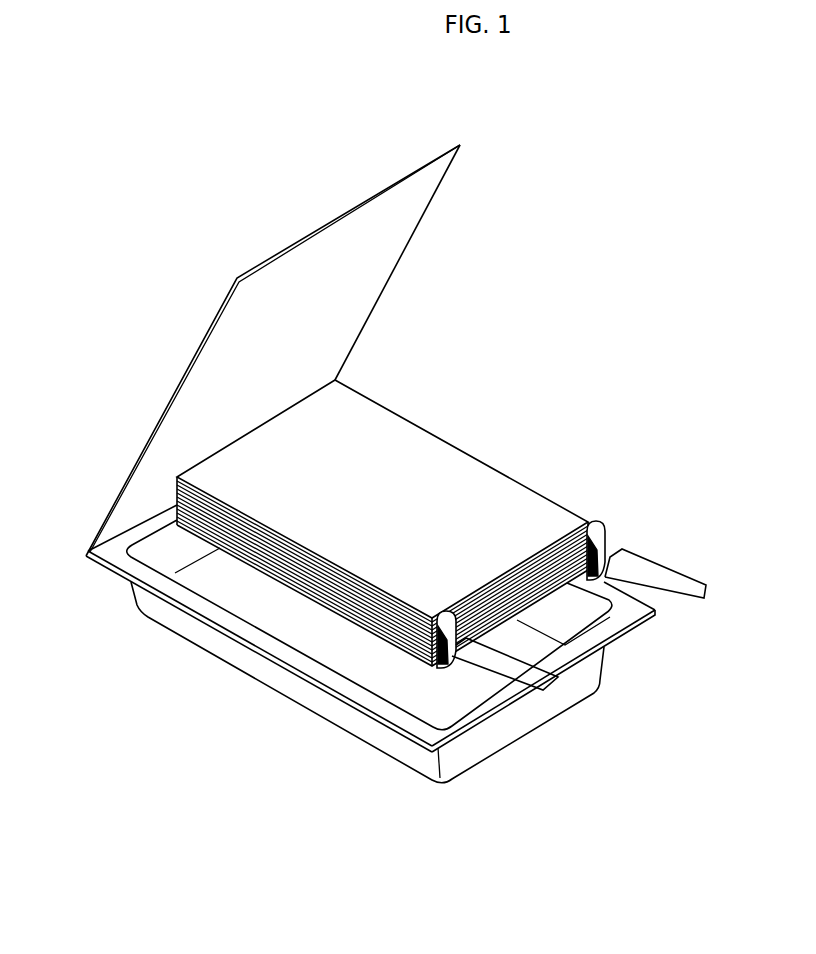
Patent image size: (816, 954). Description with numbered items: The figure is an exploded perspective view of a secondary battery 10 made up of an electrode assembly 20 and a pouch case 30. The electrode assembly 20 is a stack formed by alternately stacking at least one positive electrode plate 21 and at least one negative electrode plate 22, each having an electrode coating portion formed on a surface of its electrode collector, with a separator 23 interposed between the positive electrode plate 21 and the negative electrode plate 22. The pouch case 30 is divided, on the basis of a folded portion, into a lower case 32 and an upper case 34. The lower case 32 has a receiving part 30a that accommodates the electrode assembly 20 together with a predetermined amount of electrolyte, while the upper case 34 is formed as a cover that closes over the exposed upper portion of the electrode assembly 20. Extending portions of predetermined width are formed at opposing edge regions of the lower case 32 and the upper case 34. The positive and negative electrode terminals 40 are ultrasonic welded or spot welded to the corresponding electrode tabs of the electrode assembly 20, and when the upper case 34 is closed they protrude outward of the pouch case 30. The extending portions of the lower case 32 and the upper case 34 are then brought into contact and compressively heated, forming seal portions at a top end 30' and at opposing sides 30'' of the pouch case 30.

The secondary battery 10 is at (343, 484).
The electrode assembly 20 is at (375, 564).
The positive electrode plate 21 is at (177, 479).
The negative electrode plate 22 is at (177, 494).
The separator 23 is at (177, 487).
The pouch case 30 is at (343, 664).
The top end 30' is at (543, 693).
The opposing sides 30'' is at (259, 634).
The receiving part 30a is at (430, 704).
The lower case 32 is at (187, 632).
The upper case 34 is at (195, 378).
The positive and negative electrode terminals 40 is at (560, 678).